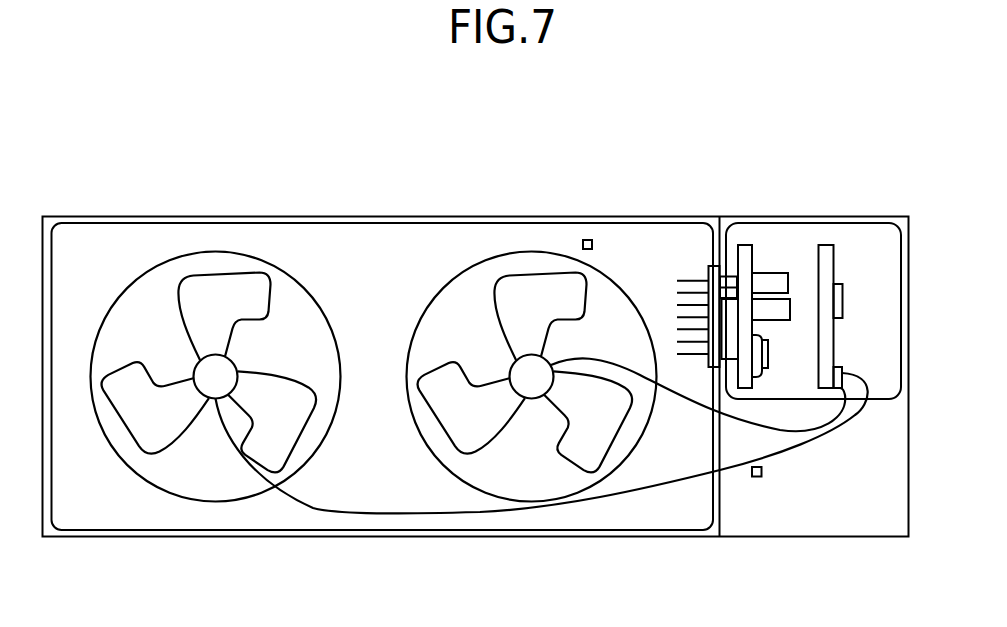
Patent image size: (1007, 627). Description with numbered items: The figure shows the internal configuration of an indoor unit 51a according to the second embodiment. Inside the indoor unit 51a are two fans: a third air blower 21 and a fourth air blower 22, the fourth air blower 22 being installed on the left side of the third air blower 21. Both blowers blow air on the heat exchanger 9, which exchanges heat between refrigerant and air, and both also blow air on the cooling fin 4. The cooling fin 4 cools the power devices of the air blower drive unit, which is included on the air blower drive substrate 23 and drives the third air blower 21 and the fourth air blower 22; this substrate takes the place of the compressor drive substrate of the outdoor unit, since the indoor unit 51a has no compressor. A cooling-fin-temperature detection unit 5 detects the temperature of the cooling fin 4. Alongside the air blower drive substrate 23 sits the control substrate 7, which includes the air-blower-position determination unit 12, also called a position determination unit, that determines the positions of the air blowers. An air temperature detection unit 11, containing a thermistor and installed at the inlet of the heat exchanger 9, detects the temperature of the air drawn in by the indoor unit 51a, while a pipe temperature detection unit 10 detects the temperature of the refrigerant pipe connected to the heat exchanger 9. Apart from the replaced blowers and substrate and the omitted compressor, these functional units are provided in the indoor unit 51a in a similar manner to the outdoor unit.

The fourth air blower 22 is at (150, 312).
The third air blower 21 is at (465, 312).
The heat exchanger 9 is at (365, 262).
The air temperature detection unit 11 is at (587, 238).
The cooling fin 4 is at (707, 272).
The cooling-fin-temperature detection unit 5 is at (728, 275).
The indoor unit 51a is at (774, 172).
The air blower drive substrate 23 is at (754, 256).
The control substrate 7 is at (836, 263).
The air-blower-position determination unit 12 is at (845, 298).
The pipe temperature detection unit 10 is at (757, 480).